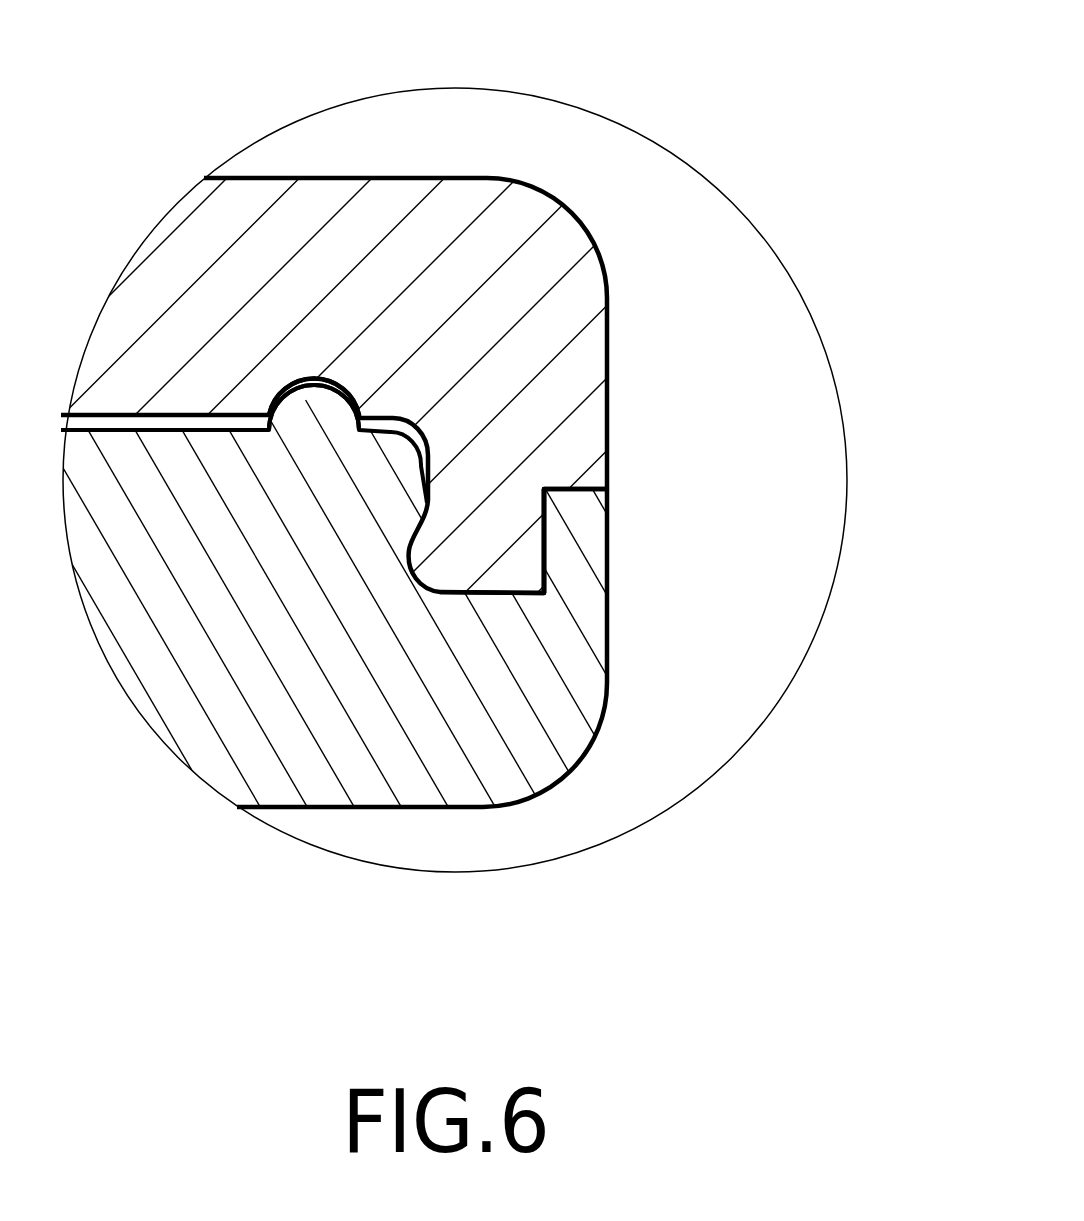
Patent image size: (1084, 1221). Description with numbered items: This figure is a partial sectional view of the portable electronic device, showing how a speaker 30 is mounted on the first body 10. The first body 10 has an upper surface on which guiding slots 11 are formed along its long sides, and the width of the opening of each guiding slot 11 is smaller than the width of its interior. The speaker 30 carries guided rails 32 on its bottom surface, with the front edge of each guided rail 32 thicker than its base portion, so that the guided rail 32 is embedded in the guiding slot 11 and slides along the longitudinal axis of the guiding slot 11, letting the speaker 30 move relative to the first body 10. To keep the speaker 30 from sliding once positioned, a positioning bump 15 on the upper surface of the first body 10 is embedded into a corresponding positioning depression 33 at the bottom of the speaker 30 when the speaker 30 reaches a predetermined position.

The first body 10 is at (281, 818).
The guiding slot 11 is at (550, 572).
The positioning bump 15 is at (322, 407).
The speaker 30 is at (263, 172).
The guided rail 32 is at (492, 565).
The positioning depression 33 is at (396, 368).